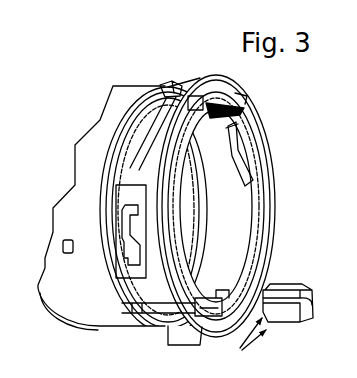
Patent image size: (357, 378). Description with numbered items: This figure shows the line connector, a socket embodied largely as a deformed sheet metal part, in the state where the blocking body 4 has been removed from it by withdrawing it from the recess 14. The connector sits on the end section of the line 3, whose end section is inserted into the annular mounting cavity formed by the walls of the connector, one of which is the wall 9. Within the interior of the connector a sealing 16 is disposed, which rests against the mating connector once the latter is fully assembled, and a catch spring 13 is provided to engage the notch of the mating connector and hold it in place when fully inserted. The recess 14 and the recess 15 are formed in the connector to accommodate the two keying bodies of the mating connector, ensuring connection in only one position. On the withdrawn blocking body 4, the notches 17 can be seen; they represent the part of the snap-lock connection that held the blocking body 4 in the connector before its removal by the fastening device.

The line 3 is at (45, 315).
The blocking body 4 is at (285, 295).
The wall 9 is at (112, 305).
The catch spring 13 is at (162, 85).
The recess 14 is at (165, 310).
The recess 15 is at (210, 118).
The sealing 16 is at (193, 195).
The notches 17 is at (243, 338).